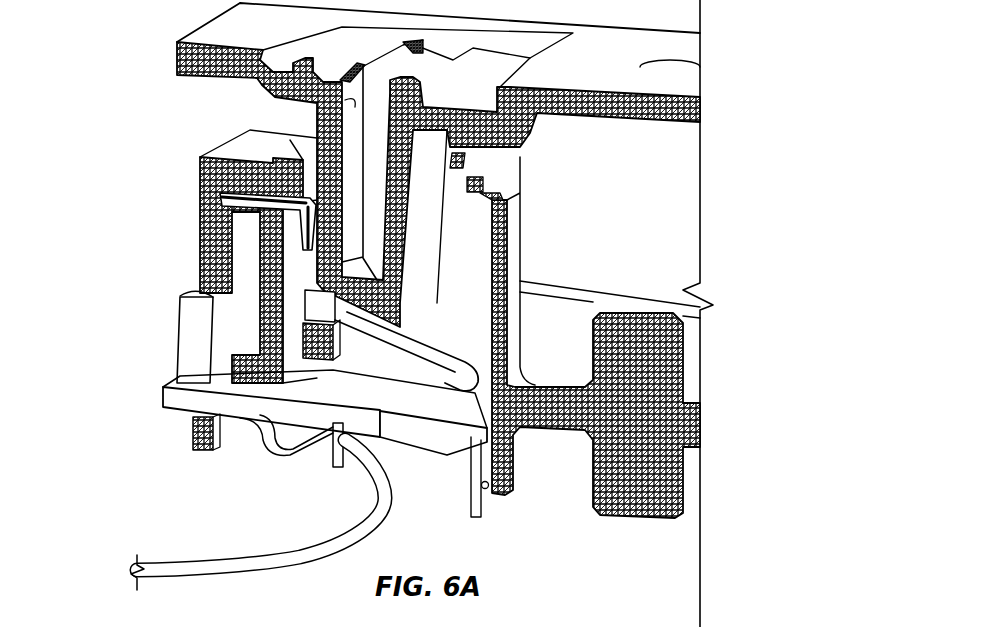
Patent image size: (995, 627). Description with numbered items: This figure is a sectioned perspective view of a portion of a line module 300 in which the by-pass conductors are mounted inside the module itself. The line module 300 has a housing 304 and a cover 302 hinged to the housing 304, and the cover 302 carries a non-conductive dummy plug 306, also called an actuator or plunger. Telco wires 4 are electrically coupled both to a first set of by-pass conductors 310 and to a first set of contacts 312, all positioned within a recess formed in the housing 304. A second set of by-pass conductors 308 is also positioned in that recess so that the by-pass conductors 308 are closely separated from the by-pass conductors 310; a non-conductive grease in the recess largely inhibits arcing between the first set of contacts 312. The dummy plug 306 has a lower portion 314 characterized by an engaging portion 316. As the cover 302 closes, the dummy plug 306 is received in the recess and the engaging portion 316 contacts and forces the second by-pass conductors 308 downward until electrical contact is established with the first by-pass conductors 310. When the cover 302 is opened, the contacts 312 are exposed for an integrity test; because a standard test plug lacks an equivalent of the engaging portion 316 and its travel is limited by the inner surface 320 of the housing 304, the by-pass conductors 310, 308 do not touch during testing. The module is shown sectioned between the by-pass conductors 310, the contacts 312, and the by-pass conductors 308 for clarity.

The line module 300 is at (367, 313).
The cover 302 is at (438, 166).
The housing 304 is at (660, 527).
The dummy plug 306 is at (353, 107).
The second set of by-pass conductors 308 is at (467, 362).
The first set of by-pass conductors 310 is at (403, 360).
The first set of contacts 312 is at (320, 297).
The lower portion 314 is at (313, 263).
The engaging portion 316 is at (383, 298).
The inner surface 320 is at (310, 337).
The Telco wires 4 is at (220, 560).